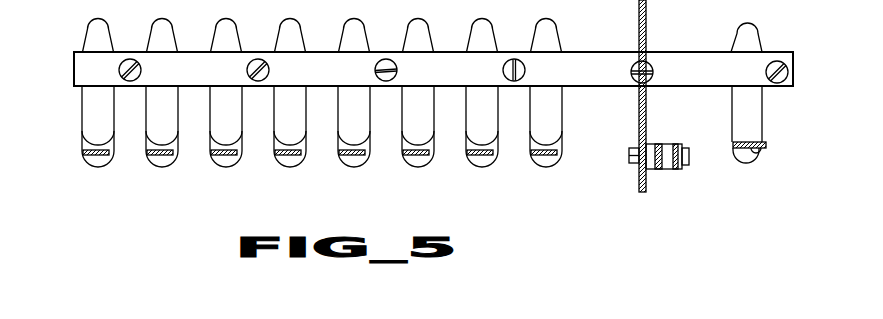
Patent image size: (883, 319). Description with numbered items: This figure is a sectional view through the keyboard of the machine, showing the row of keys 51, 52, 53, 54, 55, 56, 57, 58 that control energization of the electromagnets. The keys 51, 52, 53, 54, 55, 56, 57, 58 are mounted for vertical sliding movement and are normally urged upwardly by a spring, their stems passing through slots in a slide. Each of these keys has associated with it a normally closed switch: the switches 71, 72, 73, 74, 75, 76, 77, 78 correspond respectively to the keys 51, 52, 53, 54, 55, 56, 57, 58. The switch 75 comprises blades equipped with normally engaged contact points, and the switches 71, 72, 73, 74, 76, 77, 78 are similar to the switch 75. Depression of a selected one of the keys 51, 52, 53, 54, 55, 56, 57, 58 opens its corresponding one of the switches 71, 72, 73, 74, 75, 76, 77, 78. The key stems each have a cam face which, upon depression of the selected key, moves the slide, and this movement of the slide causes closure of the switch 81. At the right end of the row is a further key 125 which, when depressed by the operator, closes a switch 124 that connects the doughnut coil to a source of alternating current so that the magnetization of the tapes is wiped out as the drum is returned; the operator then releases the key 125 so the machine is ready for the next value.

The key 51 is at (94, 158).
The key 52 is at (158, 158).
The key 53 is at (222, 158).
The key 54 is at (286, 158).
The key 55 is at (350, 158).
The key 56 is at (414, 158).
The key 57 is at (478, 158).
The key 58 is at (542, 158).
The normally closed switch 71 is at (92, 118).
The normally closed switch 72 is at (149, 93).
The normally closed switch 73 is at (213, 93).
The normally closed switch 74 is at (277, 93).
The normally closed switch 75 is at (341, 93).
The normally closed switch 76 is at (405, 93).
The normally closed switch 77 is at (469, 93).
The normally closed switch 78 is at (533, 93).
The switch 81 is at (670, 163).
The switch 124 is at (765, 117).
The key 125 is at (760, 150).